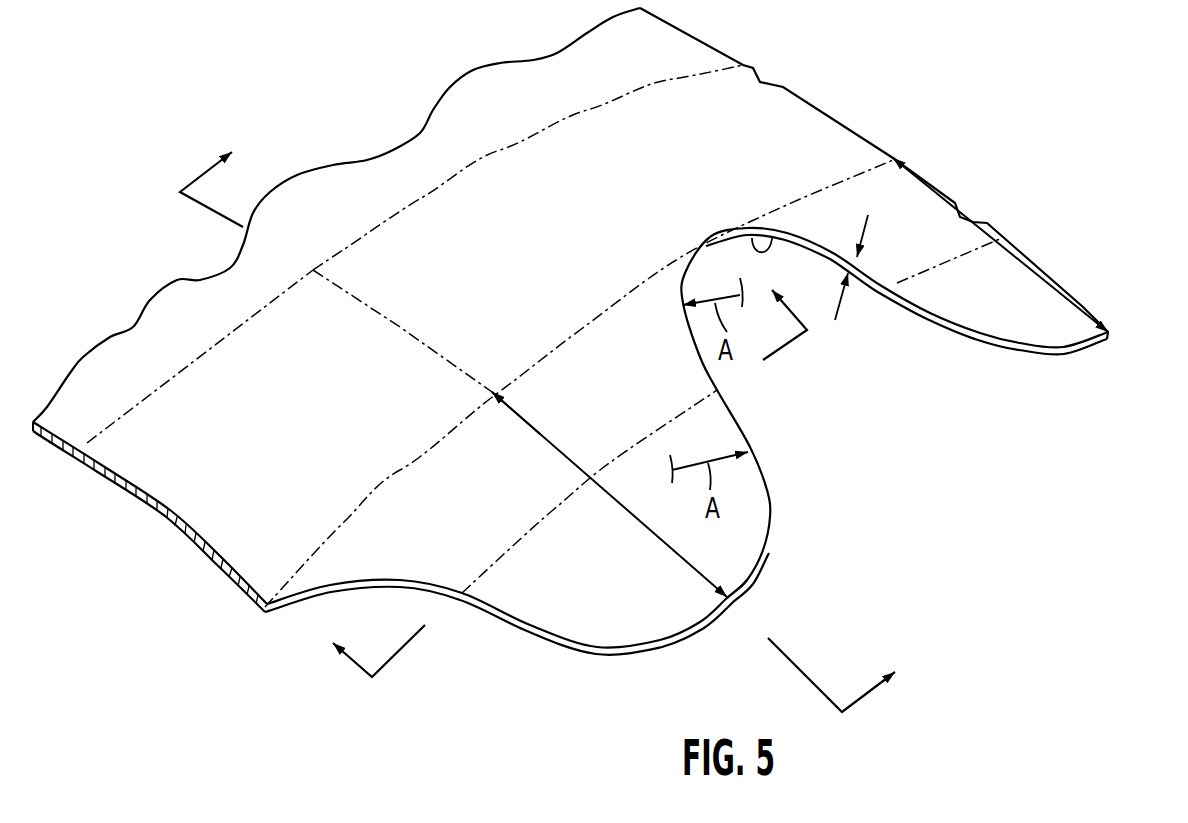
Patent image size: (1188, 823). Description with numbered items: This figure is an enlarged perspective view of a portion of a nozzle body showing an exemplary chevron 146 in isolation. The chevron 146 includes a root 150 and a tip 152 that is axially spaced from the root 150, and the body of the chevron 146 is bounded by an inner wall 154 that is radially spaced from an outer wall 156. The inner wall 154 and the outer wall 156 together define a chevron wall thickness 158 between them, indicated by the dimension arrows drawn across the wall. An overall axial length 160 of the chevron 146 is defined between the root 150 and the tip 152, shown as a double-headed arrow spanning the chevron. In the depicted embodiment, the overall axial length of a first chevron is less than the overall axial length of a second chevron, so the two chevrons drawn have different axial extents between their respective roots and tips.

The chevron 146 is at (658, 400).
The root 150 is at (709, 238).
The tip 152 is at (732, 602).
The inner wall 154 is at (772, 238).
The outer wall 156 is at (848, 143).
The chevron wall thickness 158 is at (867, 233).
The overall axial length 160 is at (557, 440).